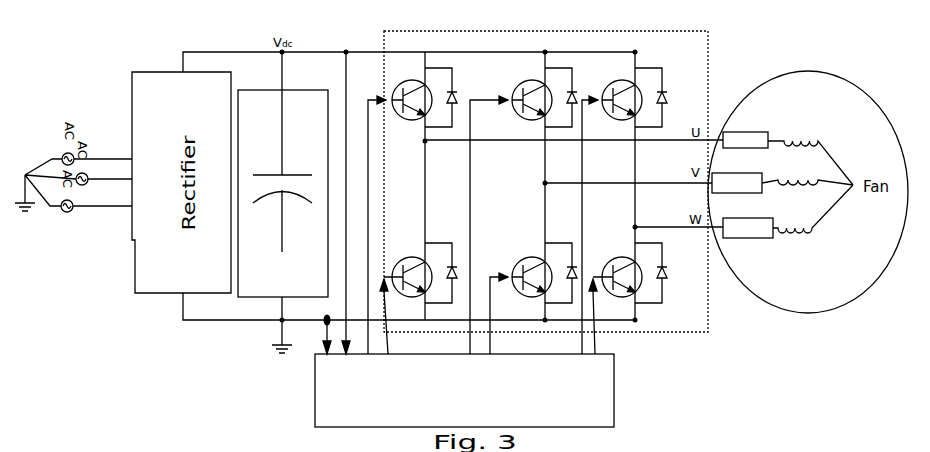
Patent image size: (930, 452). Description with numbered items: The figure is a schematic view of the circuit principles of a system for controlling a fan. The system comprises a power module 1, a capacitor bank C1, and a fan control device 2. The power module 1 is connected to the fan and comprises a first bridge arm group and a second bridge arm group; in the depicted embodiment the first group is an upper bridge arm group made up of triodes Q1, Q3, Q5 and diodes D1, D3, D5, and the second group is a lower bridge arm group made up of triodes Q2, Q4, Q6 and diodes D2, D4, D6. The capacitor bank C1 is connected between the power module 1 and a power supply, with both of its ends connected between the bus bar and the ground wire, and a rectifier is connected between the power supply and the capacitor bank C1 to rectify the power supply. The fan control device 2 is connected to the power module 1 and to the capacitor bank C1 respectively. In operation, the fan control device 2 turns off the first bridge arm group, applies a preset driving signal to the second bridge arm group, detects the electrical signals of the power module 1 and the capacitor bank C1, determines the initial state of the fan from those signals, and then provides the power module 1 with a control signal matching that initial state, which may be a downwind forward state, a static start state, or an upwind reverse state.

The power module 1 is at (583, 174).
The fan control device 2 is at (615, 403).
The capacitor bank C1 is at (284, 202).
The triode Q1 is at (410, 95).
The triode Q2 is at (410, 271).
The triode Q3 is at (532, 95).
The triode Q4 is at (529, 271).
The triode Q5 is at (622, 95).
The triode Q6 is at (617, 271).
The diode D1 is at (451, 97).
The diode D2 is at (441, 273).
The diode D3 is at (571, 97).
The diode D4 is at (561, 273).
The diode D5 is at (661, 97).
The diode D6 is at (661, 273).